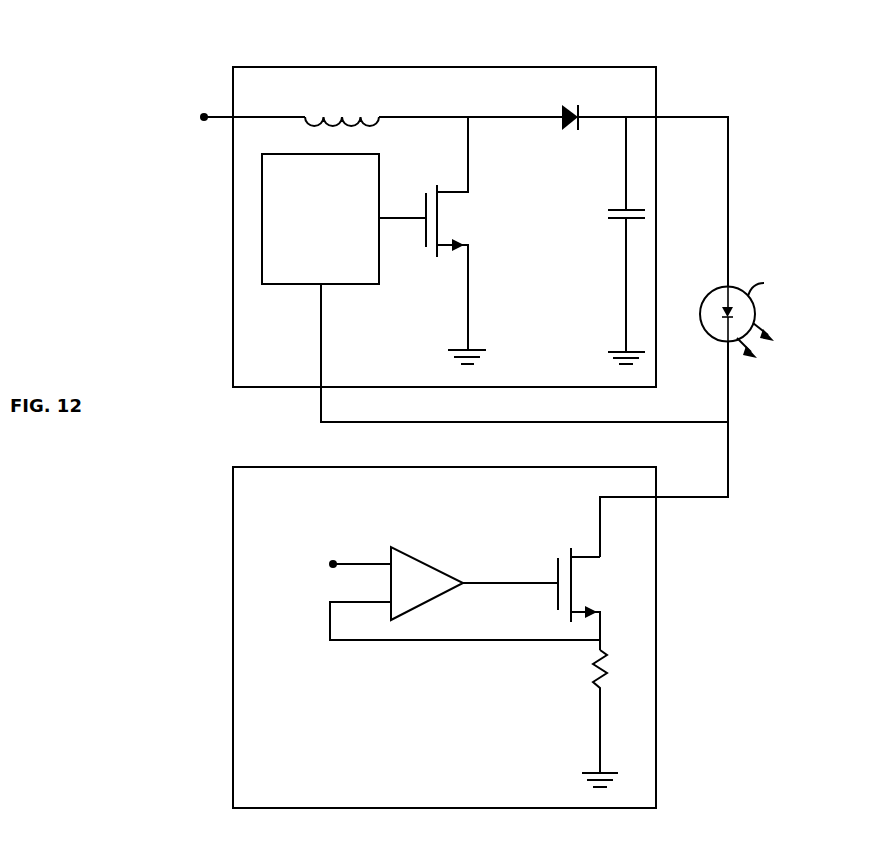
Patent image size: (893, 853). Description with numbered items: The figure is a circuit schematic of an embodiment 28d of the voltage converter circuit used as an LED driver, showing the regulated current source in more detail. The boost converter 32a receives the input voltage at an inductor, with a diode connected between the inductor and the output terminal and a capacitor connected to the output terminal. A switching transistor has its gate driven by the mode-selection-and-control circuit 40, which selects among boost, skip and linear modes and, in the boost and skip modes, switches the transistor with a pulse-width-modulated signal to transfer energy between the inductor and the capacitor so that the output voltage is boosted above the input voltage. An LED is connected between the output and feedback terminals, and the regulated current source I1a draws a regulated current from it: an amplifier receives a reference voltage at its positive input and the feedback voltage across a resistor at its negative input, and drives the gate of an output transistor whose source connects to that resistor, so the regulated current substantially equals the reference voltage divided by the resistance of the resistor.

The voltage converter circuit 28d is at (193, 44).
The boost converter 32a is at (444, 227).
The mode-selection-and-control circuit 40 is at (320, 219).
The regulated current source I1a is at (444, 637).